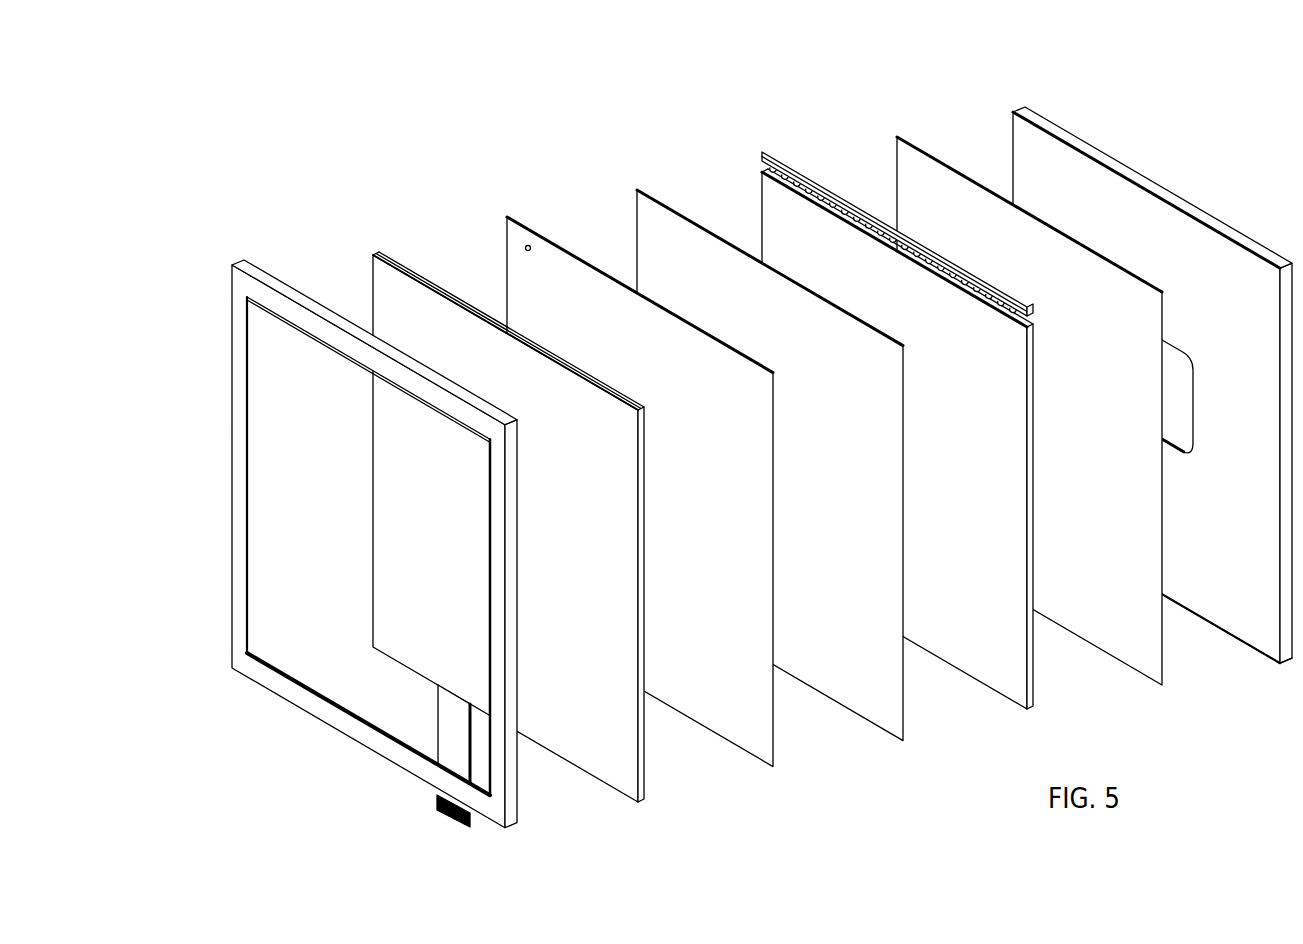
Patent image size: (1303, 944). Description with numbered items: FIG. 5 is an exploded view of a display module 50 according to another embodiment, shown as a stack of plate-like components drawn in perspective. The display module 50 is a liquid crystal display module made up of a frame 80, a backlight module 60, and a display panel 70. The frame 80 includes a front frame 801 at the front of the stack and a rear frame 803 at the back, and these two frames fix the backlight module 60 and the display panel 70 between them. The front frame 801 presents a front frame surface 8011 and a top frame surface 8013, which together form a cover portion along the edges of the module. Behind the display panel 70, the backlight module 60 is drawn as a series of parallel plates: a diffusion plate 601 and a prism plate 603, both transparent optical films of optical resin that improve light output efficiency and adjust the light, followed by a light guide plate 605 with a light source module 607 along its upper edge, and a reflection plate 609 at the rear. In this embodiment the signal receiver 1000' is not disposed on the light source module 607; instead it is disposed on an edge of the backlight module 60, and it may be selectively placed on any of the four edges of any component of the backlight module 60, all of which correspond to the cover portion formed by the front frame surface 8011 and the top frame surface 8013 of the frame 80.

The display module 50 is at (285, 108).
The backlight module 60 is at (834, 400).
The display panel 70 is at (374, 256).
The frame 80 is at (731, 442).
The front frame 801 is at (542, 498).
The front frame surface 8011 is at (238, 292).
The top frame surface 8013 is at (247, 265).
The rear frame 803 is at (1112, 145).
The diffusion plate 601 is at (507, 217).
The prism plate 603 is at (637, 190).
The light guide plate 605 is at (760, 197).
The light source module 607 is at (767, 150).
The reflection plate 609 is at (897, 137).
The signal receiver 1000' is at (571, 225).